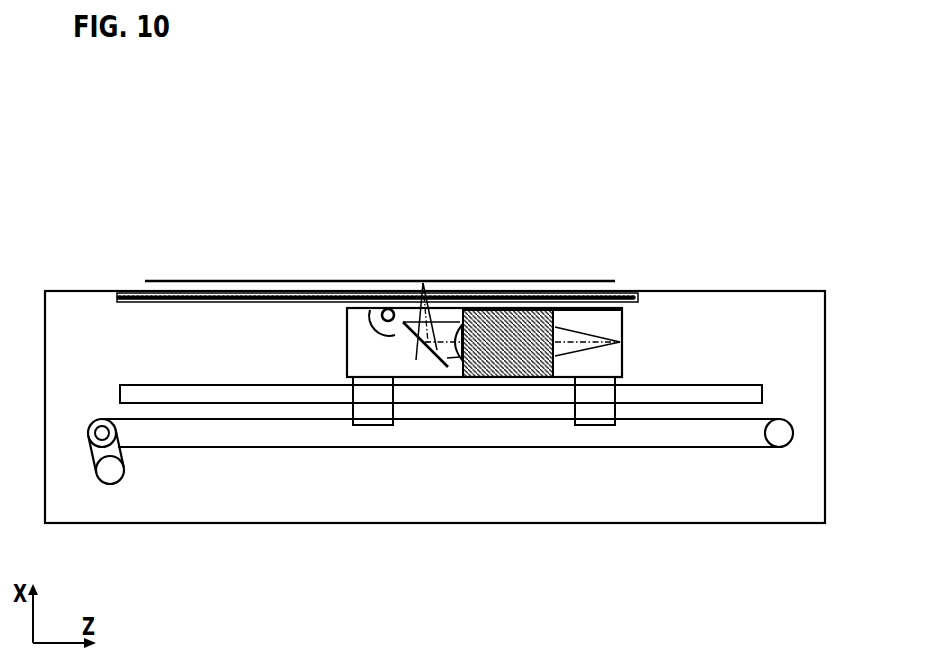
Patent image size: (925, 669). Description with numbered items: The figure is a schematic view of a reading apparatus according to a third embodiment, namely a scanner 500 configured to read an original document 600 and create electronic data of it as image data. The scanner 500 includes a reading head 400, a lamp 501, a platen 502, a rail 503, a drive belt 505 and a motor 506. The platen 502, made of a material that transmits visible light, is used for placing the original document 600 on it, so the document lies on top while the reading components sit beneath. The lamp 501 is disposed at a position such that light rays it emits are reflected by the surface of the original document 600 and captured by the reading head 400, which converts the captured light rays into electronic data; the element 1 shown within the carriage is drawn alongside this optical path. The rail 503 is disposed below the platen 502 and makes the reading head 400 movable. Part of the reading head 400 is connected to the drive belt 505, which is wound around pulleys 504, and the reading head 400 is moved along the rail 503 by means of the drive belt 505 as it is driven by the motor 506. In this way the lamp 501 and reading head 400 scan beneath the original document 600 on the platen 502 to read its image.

The scanner 500 is at (754, 208).
The original document 600 is at (207, 280).
The platen 502 is at (565, 292).
The lamp 501 is at (389, 308).
The imaging lens / sensor unit 1 is at (495, 318).
The reading head 400 is at (622, 327).
The rail 503 is at (745, 384).
The pulleys 504 is at (777, 438).
The drive belt 505 is at (480, 447).
The motor 506 is at (110, 485).